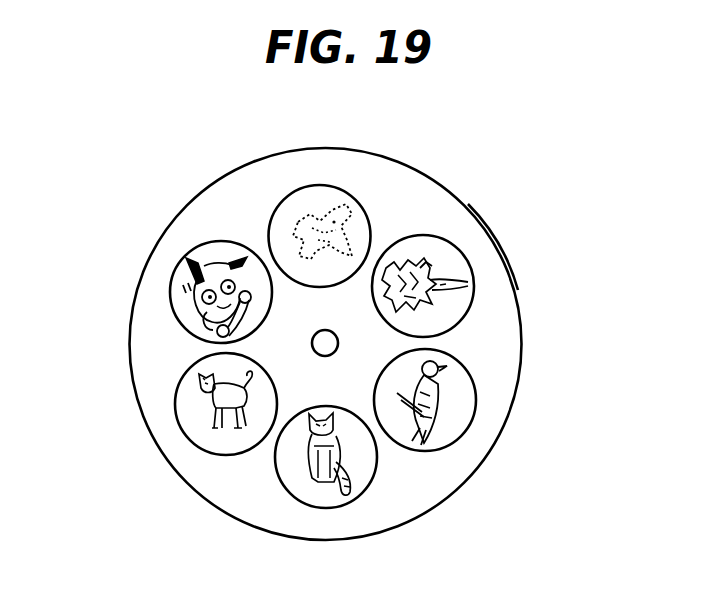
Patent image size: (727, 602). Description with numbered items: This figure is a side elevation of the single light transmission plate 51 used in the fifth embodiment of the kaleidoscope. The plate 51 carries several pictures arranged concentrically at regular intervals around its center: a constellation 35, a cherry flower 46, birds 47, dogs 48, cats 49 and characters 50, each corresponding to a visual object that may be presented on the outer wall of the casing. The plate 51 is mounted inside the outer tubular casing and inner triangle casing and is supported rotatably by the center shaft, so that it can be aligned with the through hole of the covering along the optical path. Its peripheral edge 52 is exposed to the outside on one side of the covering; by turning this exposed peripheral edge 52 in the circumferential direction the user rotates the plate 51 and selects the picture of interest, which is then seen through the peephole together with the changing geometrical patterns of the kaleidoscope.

The constellation 35 is at (350, 217).
The cherry flower 46 is at (430, 258).
The birds 47 is at (458, 387).
The dogs 48 is at (195, 417).
The cats 49 is at (358, 455).
The characters 50 is at (193, 315).
The light transmission plate 51 is at (492, 340).
The peripheral edge 52 is at (511, 262).